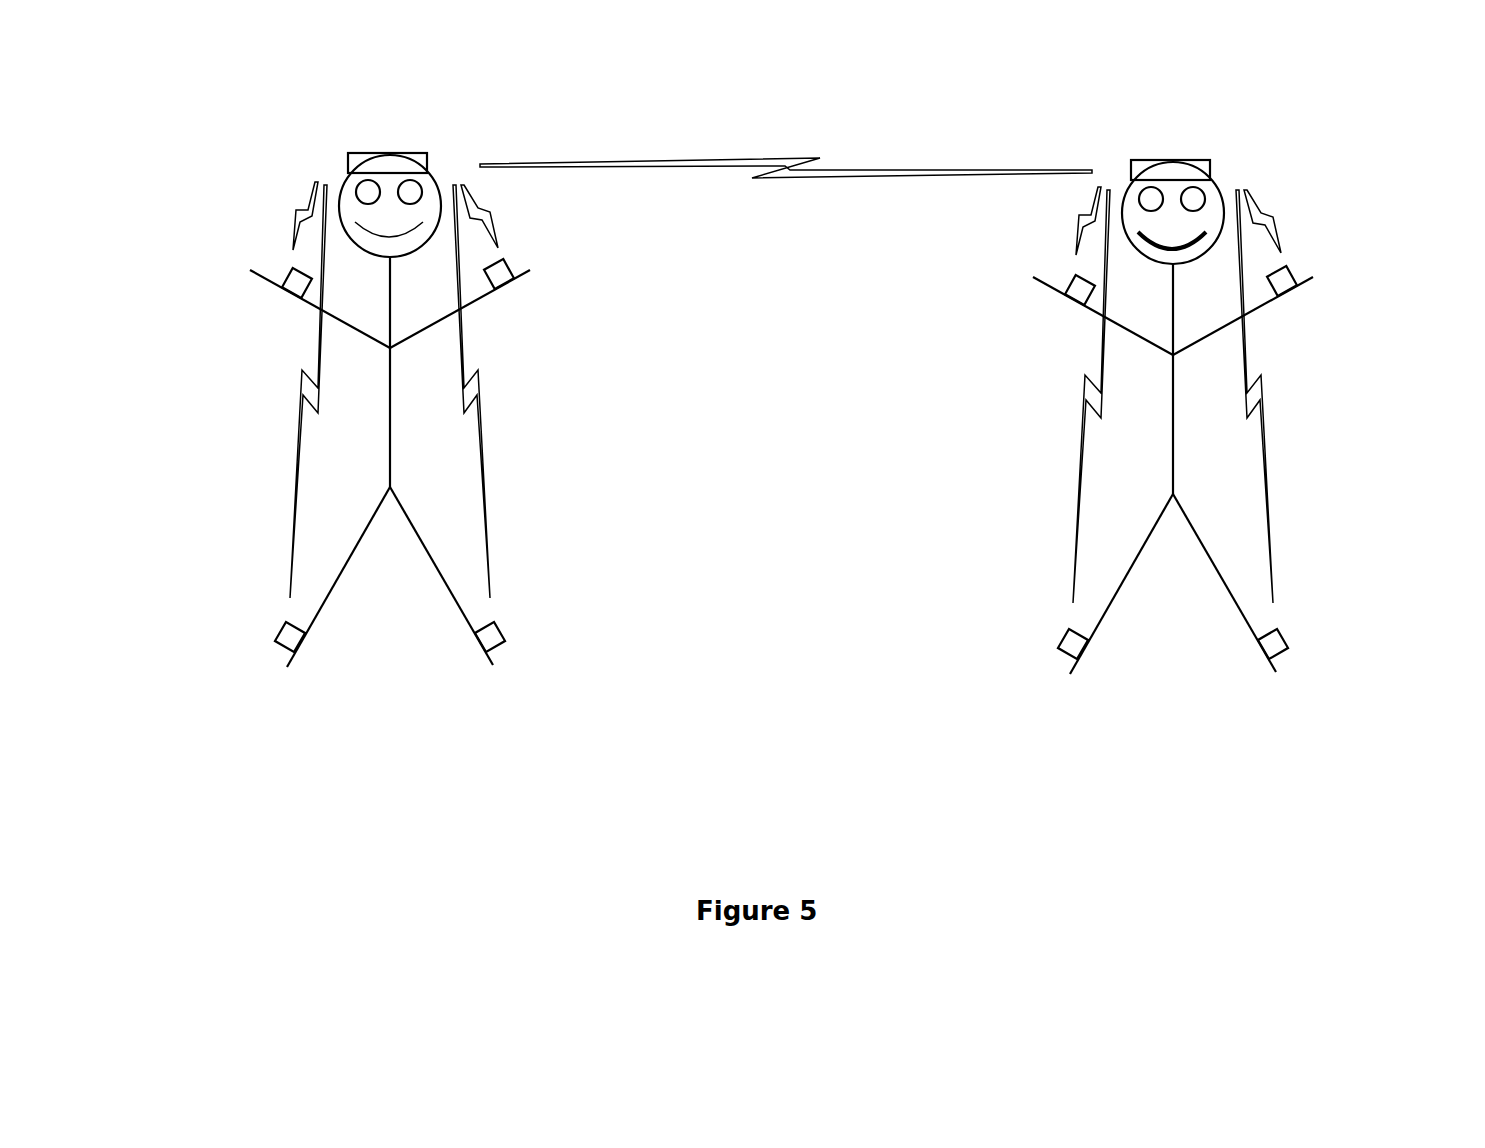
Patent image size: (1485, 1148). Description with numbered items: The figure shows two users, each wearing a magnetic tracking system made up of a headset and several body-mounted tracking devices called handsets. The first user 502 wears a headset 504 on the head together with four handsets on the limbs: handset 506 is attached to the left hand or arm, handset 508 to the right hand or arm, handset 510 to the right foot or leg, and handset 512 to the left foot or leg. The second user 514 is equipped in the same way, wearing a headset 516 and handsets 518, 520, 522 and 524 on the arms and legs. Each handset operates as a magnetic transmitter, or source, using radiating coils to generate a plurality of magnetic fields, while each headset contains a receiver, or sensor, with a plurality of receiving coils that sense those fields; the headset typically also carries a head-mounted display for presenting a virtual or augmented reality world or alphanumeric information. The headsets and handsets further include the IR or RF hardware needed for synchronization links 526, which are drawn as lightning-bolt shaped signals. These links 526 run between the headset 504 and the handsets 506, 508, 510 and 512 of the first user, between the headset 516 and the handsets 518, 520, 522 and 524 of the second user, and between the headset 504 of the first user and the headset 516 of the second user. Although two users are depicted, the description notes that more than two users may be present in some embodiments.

The user 502 is at (415, 654).
The headset 504 is at (390, 135).
The handset 506 is at (518, 308).
The handset 508 is at (278, 309).
The handset 510 is at (274, 670).
The handset 512 is at (514, 669).
The user 514 is at (1197, 662).
The headset 516 is at (1173, 142).
The handset 518 is at (1303, 317).
The handset 520 is at (1060, 316).
The handset 522 is at (1058, 675).
The handset 524 is at (1298, 675).
The synchronization links 526 is at (276, 501).